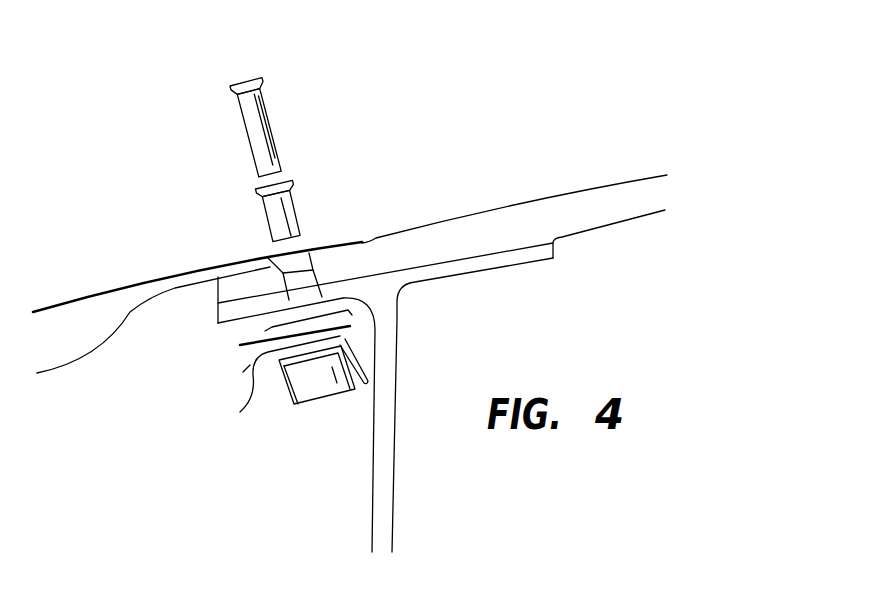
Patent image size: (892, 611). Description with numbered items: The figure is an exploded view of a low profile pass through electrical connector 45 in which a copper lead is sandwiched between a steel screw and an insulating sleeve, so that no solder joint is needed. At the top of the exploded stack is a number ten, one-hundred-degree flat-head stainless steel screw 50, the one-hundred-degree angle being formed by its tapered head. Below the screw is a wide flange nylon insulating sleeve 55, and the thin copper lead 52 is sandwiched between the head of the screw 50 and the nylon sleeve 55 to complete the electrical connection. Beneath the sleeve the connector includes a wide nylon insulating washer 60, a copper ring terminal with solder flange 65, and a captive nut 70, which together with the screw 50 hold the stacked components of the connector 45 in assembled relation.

The low profile pass through electrical connector 45 is at (447, 146).
The flat-head stainless steel screw 50 is at (265, 138).
The thin copper lead 52 is at (163, 277).
The wide flange nylon insulating sleeve 55 is at (275, 218).
The wide nylon insulating washer 60 is at (240, 345).
The copper ring terminal with solder flange 65 is at (240, 412).
The captive nut 70 is at (309, 399).